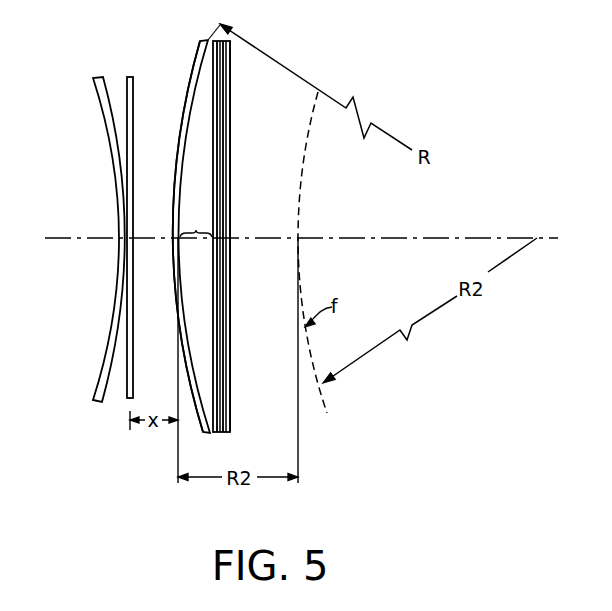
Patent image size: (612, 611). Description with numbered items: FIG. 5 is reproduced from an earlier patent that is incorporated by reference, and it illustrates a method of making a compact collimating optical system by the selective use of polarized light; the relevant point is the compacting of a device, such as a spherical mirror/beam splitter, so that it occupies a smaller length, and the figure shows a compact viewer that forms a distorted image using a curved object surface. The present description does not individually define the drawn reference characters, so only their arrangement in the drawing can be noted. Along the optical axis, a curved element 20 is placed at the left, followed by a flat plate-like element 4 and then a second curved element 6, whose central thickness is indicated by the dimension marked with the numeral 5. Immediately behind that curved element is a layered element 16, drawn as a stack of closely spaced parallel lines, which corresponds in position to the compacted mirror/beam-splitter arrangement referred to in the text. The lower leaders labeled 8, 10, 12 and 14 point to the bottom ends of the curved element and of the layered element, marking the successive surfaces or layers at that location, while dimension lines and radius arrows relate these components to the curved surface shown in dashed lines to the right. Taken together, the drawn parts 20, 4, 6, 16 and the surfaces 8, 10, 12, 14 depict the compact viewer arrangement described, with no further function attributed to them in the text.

The first lens 20 is at (103, 117).
The plate 4 is at (135, 373).
The meniscus lens 6 is at (195, 83).
The lens thickness 5 is at (196, 222).
The multilayer element 16 is at (234, 133).
The first surface 8 is at (207, 431).
The second surface 10 is at (218, 436).
The third surface 12 is at (222, 435).
The fourth surface 14 is at (230, 423).